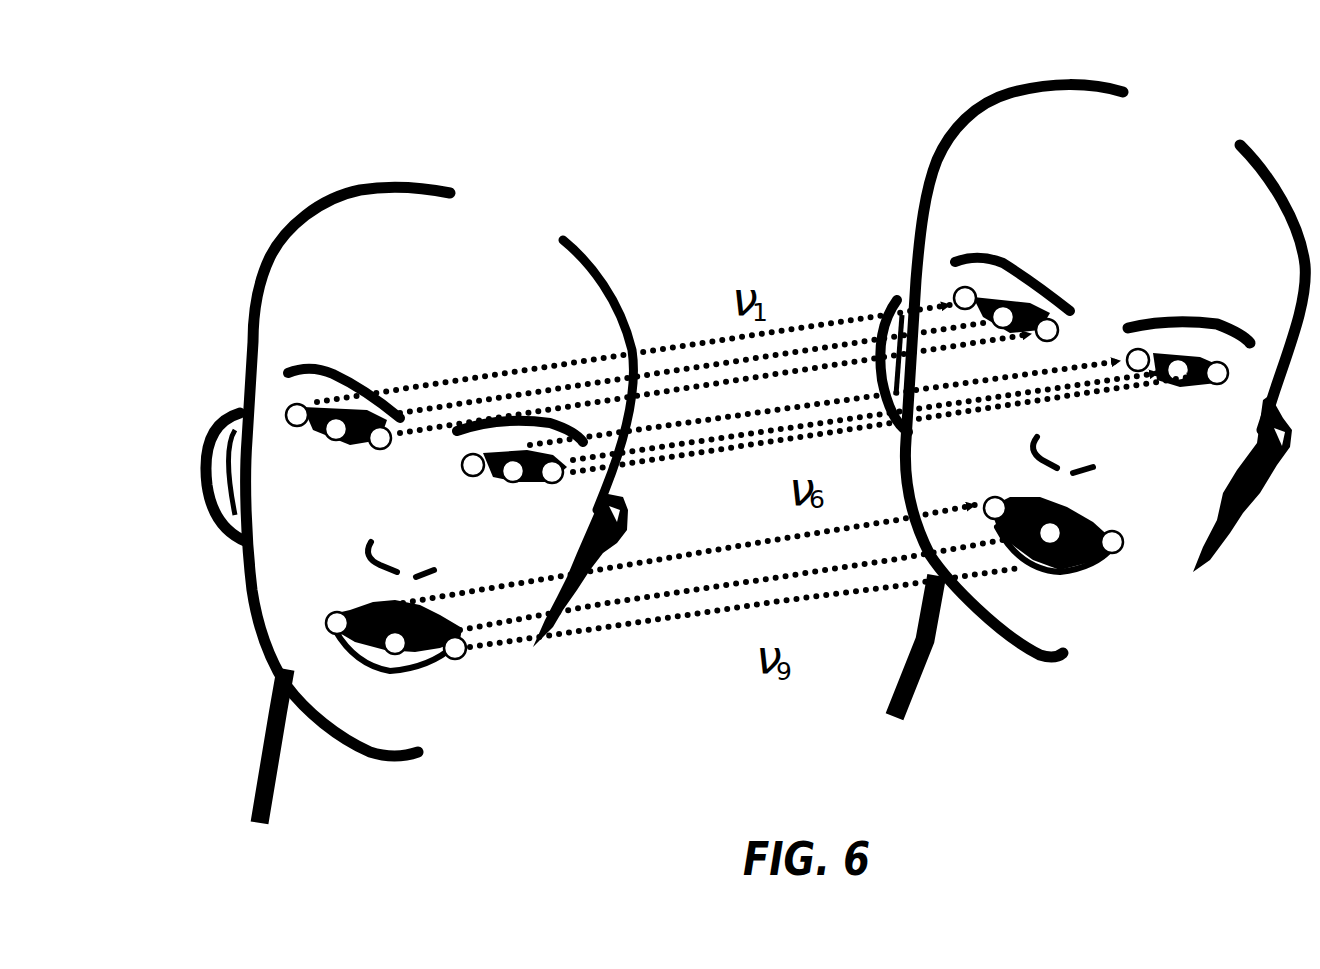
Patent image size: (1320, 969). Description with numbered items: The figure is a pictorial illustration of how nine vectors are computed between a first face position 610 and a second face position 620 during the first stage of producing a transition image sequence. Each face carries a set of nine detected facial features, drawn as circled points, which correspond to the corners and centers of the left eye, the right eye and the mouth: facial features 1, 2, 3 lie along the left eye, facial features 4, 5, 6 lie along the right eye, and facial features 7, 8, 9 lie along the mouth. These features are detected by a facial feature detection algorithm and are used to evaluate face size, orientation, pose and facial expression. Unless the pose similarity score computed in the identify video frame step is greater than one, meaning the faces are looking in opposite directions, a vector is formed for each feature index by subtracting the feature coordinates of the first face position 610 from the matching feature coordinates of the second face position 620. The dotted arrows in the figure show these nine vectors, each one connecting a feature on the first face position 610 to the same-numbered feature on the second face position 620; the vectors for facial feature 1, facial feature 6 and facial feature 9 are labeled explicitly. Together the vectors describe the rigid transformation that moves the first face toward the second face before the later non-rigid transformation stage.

The first face position 610 is at (366, 191).
The second face position 620 is at (1046, 84).
The facial feature 1 is at (631, 356).
The facial feature 2 is at (669, 373).
The facial feature 3 is at (713, 384).
The facial feature 4 is at (805, 412).
The facial feature 5 is at (845, 420).
The facial feature 6 is at (884, 422).
The facial feature 7 is at (666, 565).
The facial feature 8 is at (722, 588).
The facial feature 9 is at (783, 595).